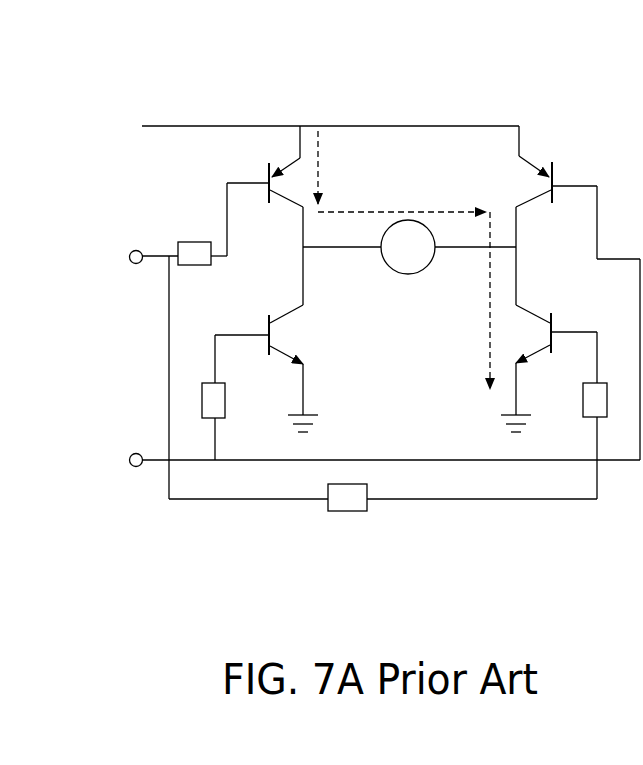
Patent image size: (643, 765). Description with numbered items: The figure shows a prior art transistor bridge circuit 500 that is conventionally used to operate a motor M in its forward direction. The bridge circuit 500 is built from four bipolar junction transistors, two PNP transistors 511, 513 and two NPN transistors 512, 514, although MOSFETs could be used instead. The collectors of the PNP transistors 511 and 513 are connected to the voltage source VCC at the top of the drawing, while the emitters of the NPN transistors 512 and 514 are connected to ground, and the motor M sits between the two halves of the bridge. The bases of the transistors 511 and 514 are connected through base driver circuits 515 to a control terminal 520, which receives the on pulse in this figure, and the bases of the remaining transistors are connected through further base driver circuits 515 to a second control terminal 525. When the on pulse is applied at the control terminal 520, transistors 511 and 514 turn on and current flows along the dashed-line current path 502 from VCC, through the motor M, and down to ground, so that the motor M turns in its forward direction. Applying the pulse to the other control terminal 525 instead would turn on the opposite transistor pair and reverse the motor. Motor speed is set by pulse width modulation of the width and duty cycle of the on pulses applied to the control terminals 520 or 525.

The transistor bridge circuit 500 is at (334, 70).
The current path 502 is at (428, 211).
The PNP transistor 511 is at (253, 163).
The NPN transistor 512 is at (276, 300).
The PNP transistor 513 is at (541, 148).
The NPN transistor 514 is at (531, 303).
The base driver circuit 515 is at (190, 242).
The control terminal 520 is at (134, 250).
The control terminal 525 is at (136, 453).